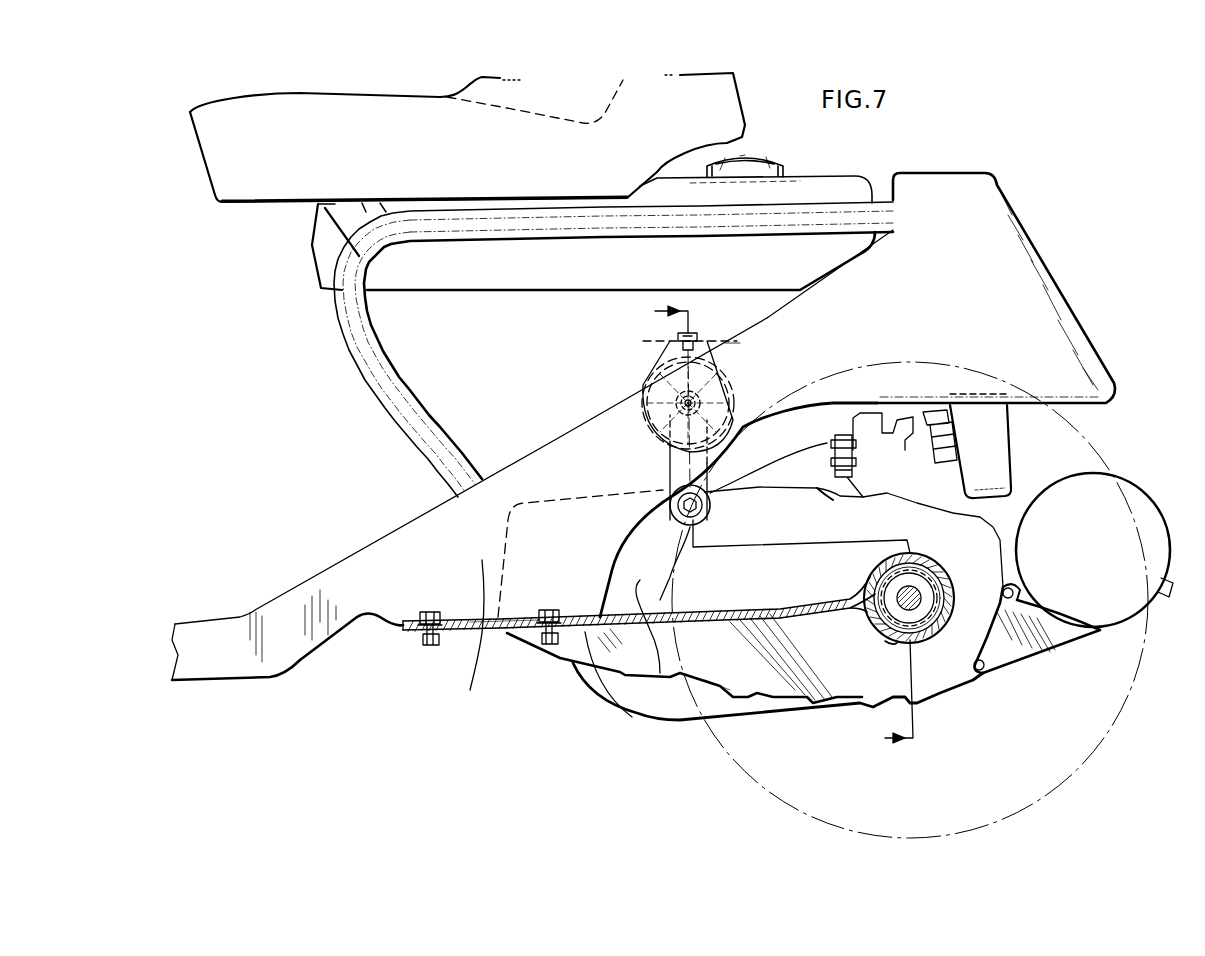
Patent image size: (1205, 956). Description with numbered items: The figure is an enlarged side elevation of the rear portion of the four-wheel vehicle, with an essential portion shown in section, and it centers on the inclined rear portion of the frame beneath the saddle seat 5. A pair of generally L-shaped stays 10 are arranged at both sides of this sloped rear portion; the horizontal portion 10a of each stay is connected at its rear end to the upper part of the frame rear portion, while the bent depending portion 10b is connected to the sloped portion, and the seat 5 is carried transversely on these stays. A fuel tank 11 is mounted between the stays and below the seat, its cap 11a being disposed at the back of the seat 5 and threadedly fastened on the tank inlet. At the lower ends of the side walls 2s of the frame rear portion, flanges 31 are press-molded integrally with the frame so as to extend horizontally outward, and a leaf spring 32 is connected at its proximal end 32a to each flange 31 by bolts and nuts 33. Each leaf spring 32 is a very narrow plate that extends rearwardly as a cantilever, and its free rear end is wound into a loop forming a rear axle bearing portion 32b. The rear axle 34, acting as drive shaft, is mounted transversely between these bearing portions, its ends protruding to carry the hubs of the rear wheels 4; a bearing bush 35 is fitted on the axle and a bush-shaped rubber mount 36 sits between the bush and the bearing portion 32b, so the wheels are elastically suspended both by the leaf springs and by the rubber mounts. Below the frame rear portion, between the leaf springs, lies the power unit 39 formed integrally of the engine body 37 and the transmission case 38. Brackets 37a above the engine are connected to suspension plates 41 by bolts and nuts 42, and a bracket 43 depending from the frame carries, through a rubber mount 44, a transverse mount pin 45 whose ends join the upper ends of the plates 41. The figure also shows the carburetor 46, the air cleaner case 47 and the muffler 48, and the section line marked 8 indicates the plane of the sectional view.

The side walls 2s is at (470, 636).
The rear wheels 4 is at (1090, 763).
The saddle seat 5 is at (278, 188).
The supporting member 8 is at (773, 525).
The L-shaped stays 10 is at (589, 320).
The horizontal portion of stay 10a is at (803, 210).
The bent depending portion of stay 10b is at (393, 390).
The fuel tank 11 is at (600, 285).
The fuel tank cap 11a is at (762, 163).
The flanges 31 is at (460, 631).
The leaf springs 32 is at (639, 636).
The proximal ends of leaf springs 32a is at (498, 633).
The rear axle bearing portion 32b is at (897, 641).
The bolts and nuts 33 is at (428, 645).
The rear axle 34 is at (900, 605).
The bearing bush 35 is at (928, 585).
The rubber mount 36 is at (935, 628).
The engine body 37 is at (640, 667).
The brackets 37a is at (670, 517).
The transmission case 38 is at (773, 683).
The power unit 39 is at (718, 666).
The suspension plates 41 is at (708, 495).
The bolts and nuts 42 is at (703, 503).
The bracket 43 is at (643, 400).
The rubber mount 44 is at (647, 420).
The mount pin 45 is at (728, 343).
The carburetor 46 is at (870, 423).
The air cleaner case 47 is at (997, 447).
The muffler 48 is at (1115, 518).